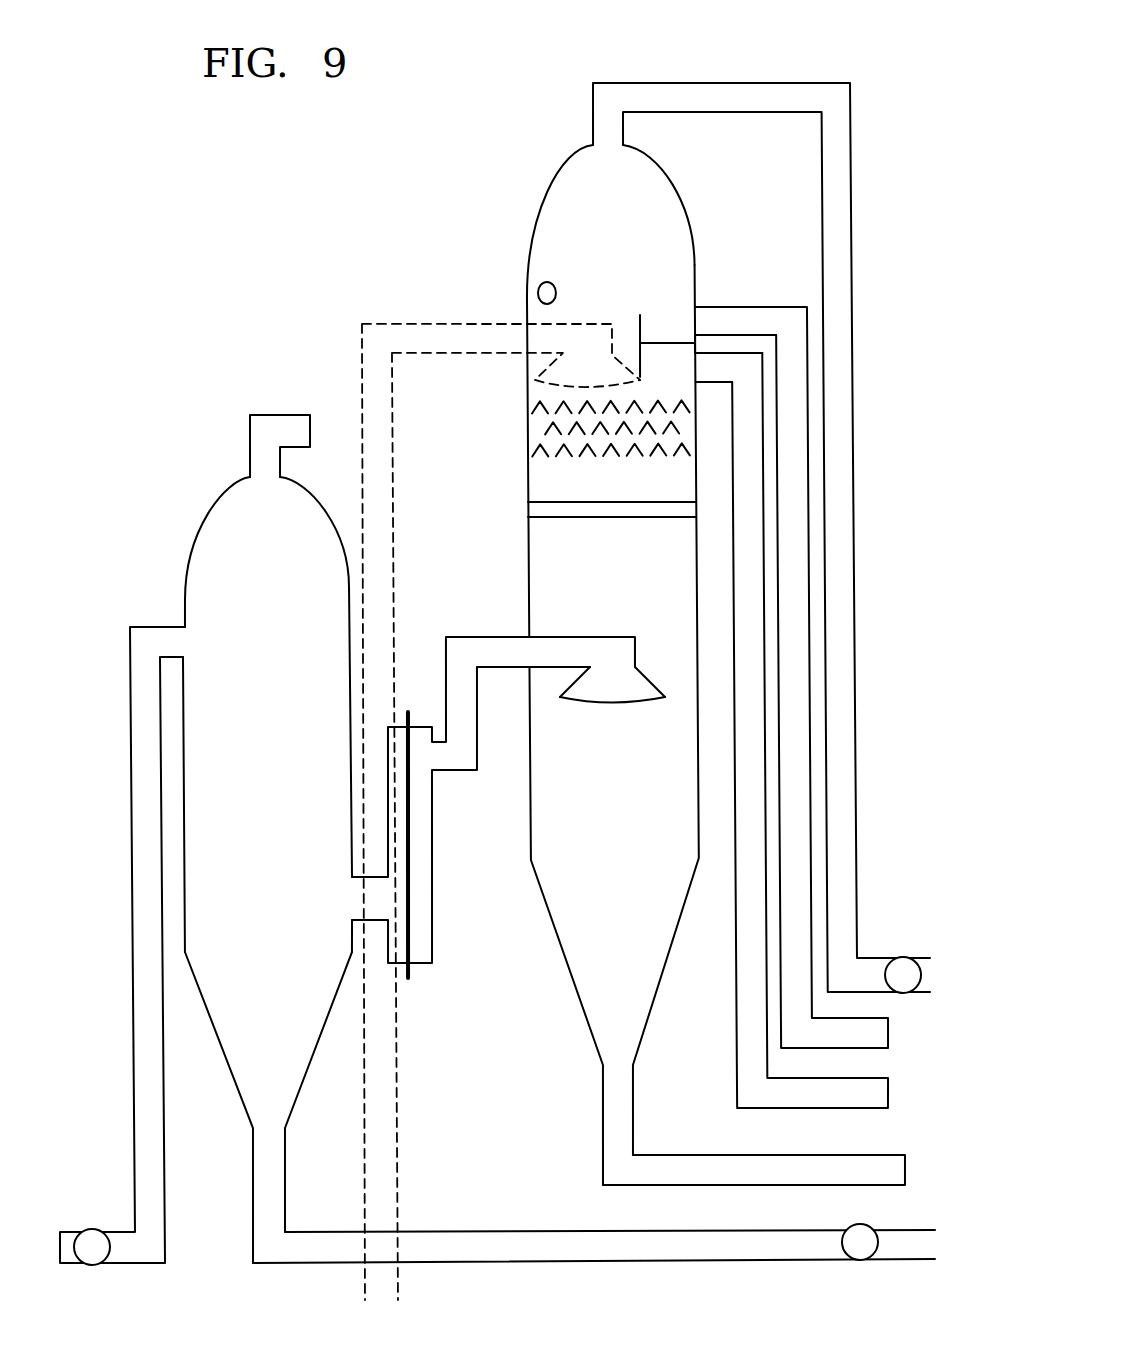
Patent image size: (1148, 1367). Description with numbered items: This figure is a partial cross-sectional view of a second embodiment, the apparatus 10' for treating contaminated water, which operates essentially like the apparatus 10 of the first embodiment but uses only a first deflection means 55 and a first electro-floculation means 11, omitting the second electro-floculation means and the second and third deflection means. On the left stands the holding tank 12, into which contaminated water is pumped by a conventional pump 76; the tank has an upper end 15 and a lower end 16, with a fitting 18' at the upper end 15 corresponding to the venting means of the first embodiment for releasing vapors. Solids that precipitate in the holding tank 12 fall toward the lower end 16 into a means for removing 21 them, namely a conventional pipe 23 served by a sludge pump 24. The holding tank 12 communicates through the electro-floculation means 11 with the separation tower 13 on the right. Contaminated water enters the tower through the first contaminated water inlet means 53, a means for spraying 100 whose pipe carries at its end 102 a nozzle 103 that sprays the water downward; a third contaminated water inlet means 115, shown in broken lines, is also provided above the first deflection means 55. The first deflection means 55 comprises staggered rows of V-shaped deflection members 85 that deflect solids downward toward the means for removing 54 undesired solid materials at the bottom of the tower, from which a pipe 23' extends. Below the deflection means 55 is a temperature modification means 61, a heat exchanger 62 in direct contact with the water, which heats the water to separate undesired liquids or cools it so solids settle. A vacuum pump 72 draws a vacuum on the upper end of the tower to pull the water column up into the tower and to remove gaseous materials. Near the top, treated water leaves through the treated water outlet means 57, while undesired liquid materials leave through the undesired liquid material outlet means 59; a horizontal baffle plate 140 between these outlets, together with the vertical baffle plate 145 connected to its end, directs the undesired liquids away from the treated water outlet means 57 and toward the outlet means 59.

The apparatus for treatment of contaminated water 10 is at (761, 498).
The apparatus for treatment of contaminated water 10' is at (181, 181).
The separation tower 13 is at (692, 193).
The undesired liquid material outlet means 59 is at (760, 306).
The vertical baffle plate 145 is at (645, 330).
The horizontal baffle plate 140 is at (676, 344).
The treated water outlet means 57 is at (735, 369).
The deflection members 85 is at (675, 428).
The temperature modification means 61 is at (679, 500).
The heat exchanger 62 is at (674, 518).
The first deflection means 55 is at (528, 440).
The first contaminated water inlet means 53 is at (472, 631).
The end of pipe 102 is at (608, 632).
The means for spraying 100 is at (593, 704).
The nozzle 103 is at (634, 702).
The first electro-floculation means 11 is at (436, 882).
The third contaminated water inlet means 115 is at (439, 321).
The inlet fitting 18' is at (228, 446).
The upper end of holding tank 15 is at (302, 476).
The holding tank 12 is at (184, 550).
The lower end of holding tank 16 is at (240, 1116).
The means for removing undesired solid materials 21 is at (249, 1186).
The pipe 23 is at (594, 1274).
The sludge pump 24 is at (858, 1249).
The vacuum pump 72 is at (903, 964).
The means for removing undesired solid materials 54 is at (638, 1071).
The bottom outlet conduit 23' is at (754, 1155).
The pump 76 is at (91, 1248).